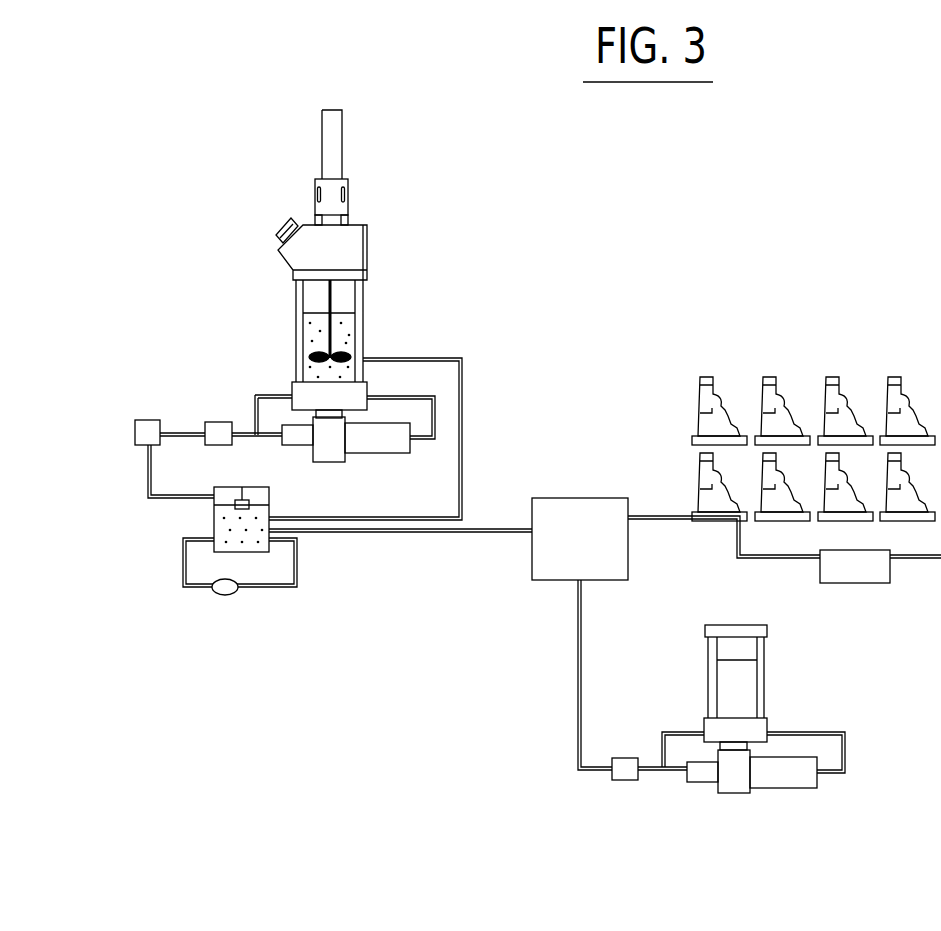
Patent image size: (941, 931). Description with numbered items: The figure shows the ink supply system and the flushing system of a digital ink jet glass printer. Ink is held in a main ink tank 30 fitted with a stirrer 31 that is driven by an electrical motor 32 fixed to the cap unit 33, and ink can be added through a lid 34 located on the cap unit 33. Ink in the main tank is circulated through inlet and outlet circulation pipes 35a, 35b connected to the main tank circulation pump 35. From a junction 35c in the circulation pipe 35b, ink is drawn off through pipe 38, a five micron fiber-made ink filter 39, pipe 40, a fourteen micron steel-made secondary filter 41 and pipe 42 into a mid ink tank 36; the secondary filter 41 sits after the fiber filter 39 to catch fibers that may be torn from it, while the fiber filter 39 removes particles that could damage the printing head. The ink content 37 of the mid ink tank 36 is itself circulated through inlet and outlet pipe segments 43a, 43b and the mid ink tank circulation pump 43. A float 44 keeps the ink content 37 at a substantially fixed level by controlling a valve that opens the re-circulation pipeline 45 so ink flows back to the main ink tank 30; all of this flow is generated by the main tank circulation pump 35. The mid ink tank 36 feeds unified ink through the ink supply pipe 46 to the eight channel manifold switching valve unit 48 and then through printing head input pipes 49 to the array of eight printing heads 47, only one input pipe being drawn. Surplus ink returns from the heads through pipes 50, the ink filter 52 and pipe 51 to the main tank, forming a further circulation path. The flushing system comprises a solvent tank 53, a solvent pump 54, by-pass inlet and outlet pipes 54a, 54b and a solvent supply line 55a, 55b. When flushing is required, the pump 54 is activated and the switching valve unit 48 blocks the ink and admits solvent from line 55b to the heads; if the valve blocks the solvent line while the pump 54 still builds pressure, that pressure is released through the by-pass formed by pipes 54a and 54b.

The main ink tank 30 is at (305, 292).
The stirrer 31 is at (318, 345).
The electrical motor 32 is at (332, 150).
The cap unit 33 is at (325, 252).
The lid 34 is at (286, 232).
The main tank circulation pump 35 is at (390, 443).
The inlet circulation pipe 35a is at (383, 398).
The outlet circulation pipe 35b is at (255, 394).
The junction 35c is at (258, 440).
The mid ink tank 36 is at (225, 498).
The ink content 37 is at (237, 545).
The pipe 38 is at (254, 420).
The ink filter 39 is at (217, 430).
The pipe 40 is at (172, 437).
The secondary filter 41 is at (150, 432).
The pipe 42 is at (148, 492).
The mid ink tank circulation pump 43 is at (218, 594).
The inlet pipe segment 43a is at (297, 575).
The outlet pipe segment 43b is at (184, 548).
The float 44 is at (252, 503).
The re-circulation pipeline 45 is at (461, 473).
The ink supply pipe 46 is at (453, 534).
The printing heads 47 is at (783, 335).
The eight channel manifold switching valve unit 48 is at (553, 572).
The printing head input pipes 49 is at (653, 516).
The pipes 50 is at (783, 559).
The pipe 51 is at (930, 560).
The ink filter 52 is at (863, 568).
The solvent tank 53 is at (725, 647).
The solvent pump 54 is at (777, 778).
The solvent by-pass inlet pipe 54a is at (845, 750).
The solvent by-pass outlet pipe 54b is at (660, 740).
The solvent supply line 55a is at (656, 772).
The solvent supply line 55b is at (580, 664).